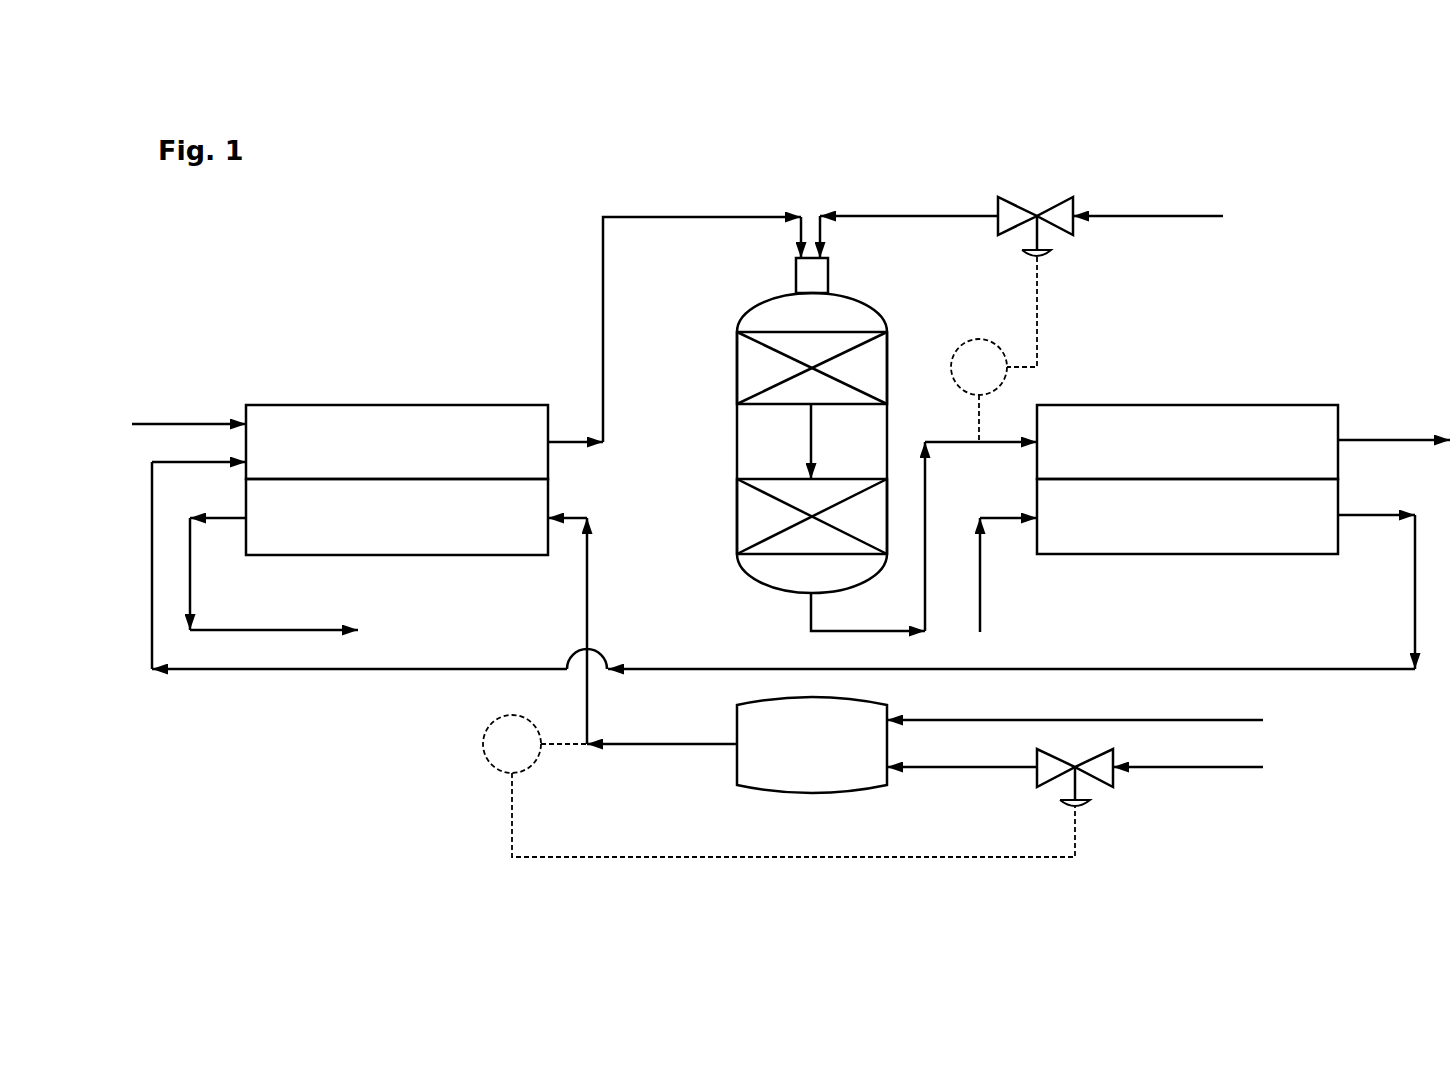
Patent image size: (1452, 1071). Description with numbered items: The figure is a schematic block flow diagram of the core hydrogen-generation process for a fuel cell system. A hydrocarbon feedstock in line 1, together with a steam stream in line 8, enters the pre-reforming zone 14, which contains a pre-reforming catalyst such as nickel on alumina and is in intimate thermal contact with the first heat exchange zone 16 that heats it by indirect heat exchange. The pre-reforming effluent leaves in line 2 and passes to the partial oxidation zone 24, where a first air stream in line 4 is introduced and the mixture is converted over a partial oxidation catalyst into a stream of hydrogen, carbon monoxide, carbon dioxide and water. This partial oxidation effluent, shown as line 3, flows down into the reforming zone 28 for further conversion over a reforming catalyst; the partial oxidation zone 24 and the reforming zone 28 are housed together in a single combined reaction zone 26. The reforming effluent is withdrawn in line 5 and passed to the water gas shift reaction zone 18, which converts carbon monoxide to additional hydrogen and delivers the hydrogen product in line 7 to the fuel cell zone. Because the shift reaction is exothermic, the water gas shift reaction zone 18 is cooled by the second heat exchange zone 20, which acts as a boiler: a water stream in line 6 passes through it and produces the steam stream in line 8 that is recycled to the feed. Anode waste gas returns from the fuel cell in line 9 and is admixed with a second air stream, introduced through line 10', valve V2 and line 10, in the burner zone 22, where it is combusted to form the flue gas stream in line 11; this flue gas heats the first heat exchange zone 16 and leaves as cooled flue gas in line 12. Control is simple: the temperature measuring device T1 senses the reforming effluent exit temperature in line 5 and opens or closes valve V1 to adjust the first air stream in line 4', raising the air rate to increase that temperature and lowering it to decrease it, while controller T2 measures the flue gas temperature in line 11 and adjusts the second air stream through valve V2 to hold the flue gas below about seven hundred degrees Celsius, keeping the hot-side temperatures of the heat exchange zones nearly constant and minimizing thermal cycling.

The hydrocarbon feedstock line 1 is at (155, 423).
The pre-reforming effluent line 2 is at (605, 417).
The partial oxidation effluent line 3 is at (812, 437).
The first air stream line 4 is at (909, 224).
The first air stream supply line 4' is at (1148, 206).
The reforming effluent line 5 is at (967, 440).
The water stream line 6 is at (982, 585).
The hydrogen product line 7 is at (1395, 440).
The steam stream line 8 is at (178, 462).
The anode waste gas line 9 is at (1077, 720).
The second air stream line 10 is at (962, 786).
The second air stream supply line 10' is at (1188, 786).
The flue gas line 11 is at (587, 556).
The cooled flue gas line 12 is at (208, 630).
The pre-reforming zone 14 is at (414, 457).
The first heat exchange zone 16 is at (414, 534).
The water gas shift reaction zone 18 is at (1203, 457).
The second heat exchange zone 20 is at (1203, 534).
The burner zone 22 is at (829, 761).
The partial oxidation zone 24 is at (767, 347).
The combined reaction zone 26 is at (893, 332).
The reforming zone 28 is at (755, 517).
The valve V1 is at (1048, 253).
The valve V2 is at (1086, 805).
The temperature measuring device T1 is at (994, 349).
The temperature controller T2 is at (779, 786).